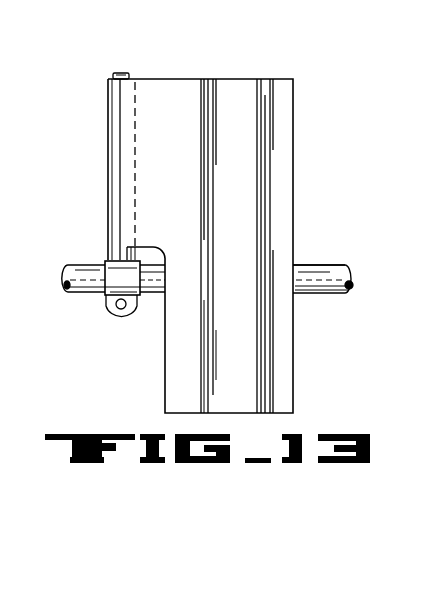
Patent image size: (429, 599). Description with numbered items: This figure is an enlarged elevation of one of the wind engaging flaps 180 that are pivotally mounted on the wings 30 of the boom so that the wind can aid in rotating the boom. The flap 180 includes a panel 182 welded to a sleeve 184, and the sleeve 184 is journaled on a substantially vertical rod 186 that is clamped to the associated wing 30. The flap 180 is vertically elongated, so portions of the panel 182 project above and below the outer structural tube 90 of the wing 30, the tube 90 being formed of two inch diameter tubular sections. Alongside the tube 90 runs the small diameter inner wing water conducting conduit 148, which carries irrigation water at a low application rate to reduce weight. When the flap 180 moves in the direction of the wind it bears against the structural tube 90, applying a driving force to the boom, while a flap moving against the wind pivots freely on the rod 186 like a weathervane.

The wind engaging flap 180 is at (293, 83).
The panel 182 is at (186, 161).
The sleeve 184 is at (108, 180).
The vertical rod 186 is at (120, 73).
The wing 30 is at (318, 265).
The inner wing water conducting conduit 148 is at (355, 283).
The outer structural tube 90 is at (327, 293).